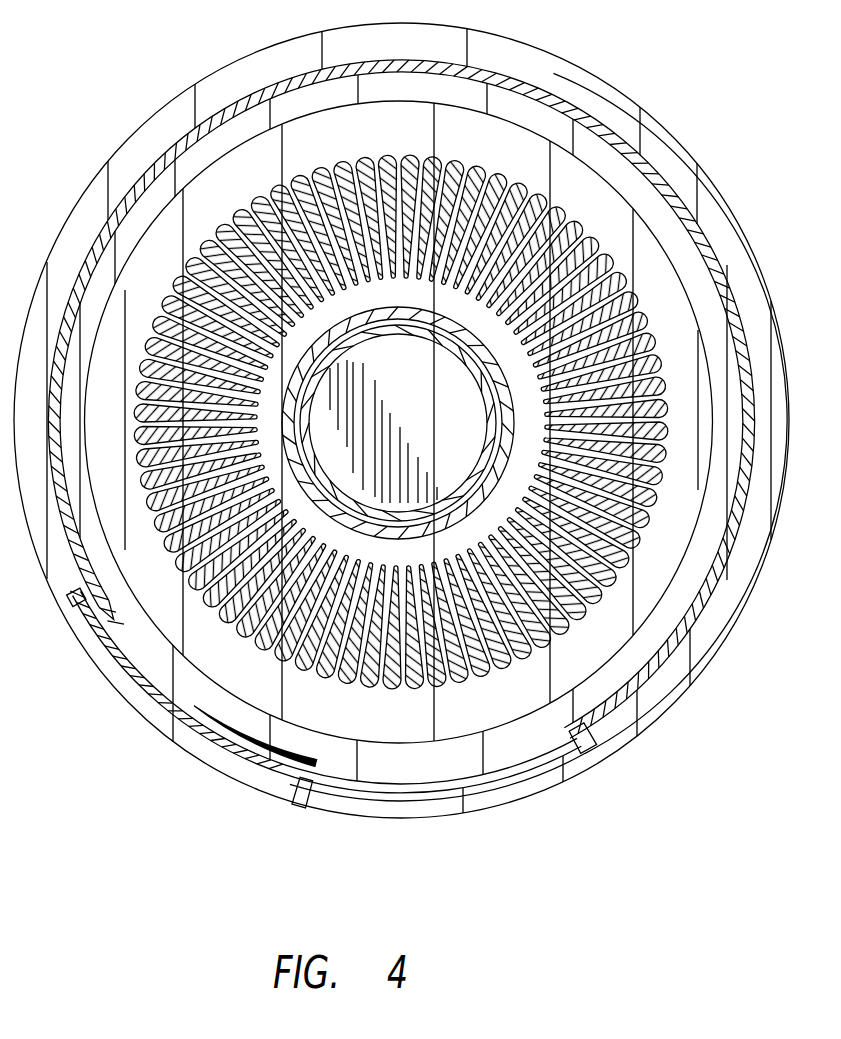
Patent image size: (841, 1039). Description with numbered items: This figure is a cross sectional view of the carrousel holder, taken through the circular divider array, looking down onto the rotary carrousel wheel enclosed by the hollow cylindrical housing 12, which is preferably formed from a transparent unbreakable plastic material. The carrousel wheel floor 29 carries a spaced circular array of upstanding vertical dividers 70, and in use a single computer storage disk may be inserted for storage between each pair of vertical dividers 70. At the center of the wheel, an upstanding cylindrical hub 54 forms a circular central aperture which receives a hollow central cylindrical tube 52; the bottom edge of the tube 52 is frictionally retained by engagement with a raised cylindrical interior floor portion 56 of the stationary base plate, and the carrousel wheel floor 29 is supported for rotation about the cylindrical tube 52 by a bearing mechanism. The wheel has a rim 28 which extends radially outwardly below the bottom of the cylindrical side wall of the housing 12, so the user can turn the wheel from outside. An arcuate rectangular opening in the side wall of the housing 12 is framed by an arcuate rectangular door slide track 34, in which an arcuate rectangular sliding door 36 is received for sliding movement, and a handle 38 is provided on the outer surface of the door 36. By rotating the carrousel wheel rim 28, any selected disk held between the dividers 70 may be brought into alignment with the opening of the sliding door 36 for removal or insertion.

The hollow cylindrical housing 12 is at (522, 65).
The rim 28 is at (720, 652).
The carrousel wheel floor 29 is at (390, 143).
The arcuate rectangular door slide track 34 is at (597, 750).
The arcuate rectangular sliding door 36 is at (170, 720).
The handle 38 is at (304, 808).
The hollow central cylindrical tube 52 is at (478, 378).
The upstanding cylindrical hub 54 is at (362, 310).
The raised cylindrical interior floor portion 56 is at (442, 433).
The vertical dividers 70 is at (456, 686).